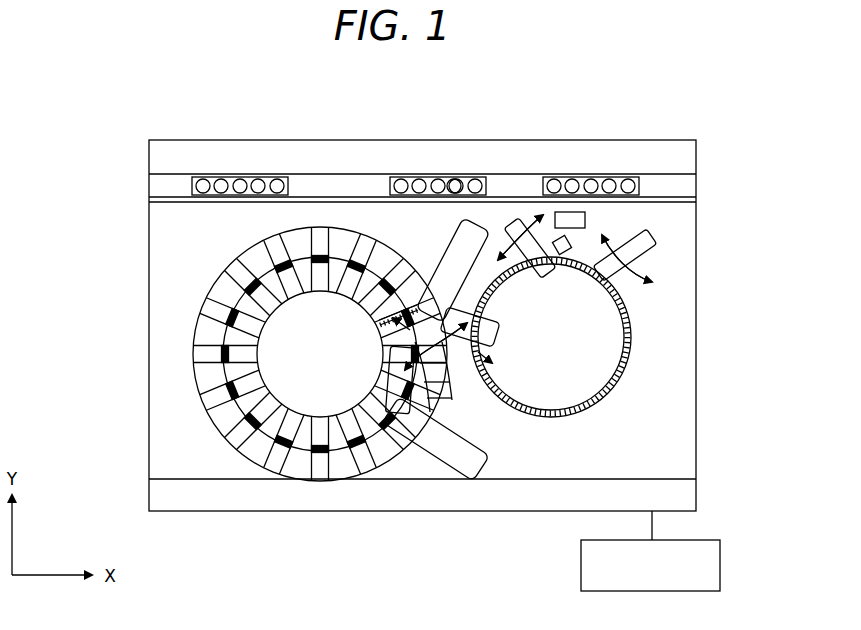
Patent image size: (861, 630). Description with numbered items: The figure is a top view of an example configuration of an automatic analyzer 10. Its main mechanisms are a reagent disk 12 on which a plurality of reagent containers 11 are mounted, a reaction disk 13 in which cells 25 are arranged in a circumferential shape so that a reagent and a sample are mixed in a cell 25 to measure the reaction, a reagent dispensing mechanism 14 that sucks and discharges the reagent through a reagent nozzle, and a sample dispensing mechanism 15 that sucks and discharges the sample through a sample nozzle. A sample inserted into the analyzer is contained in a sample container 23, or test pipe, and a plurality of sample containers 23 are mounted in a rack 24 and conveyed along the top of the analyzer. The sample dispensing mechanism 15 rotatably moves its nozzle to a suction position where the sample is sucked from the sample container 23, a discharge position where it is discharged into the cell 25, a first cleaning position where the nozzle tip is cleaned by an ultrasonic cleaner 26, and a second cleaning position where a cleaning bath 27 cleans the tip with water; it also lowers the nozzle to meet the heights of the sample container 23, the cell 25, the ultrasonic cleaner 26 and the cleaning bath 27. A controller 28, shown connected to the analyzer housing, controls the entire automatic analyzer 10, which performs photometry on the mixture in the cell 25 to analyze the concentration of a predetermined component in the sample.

The automatic analyzer 10 is at (168, 260).
The reagent container 11 is at (195, 353).
The reagent disk 12 is at (252, 462).
The reaction disk 13 is at (560, 395).
The reagent dispensing mechanism 14 is at (453, 460).
The sample dispensing mechanism 15 is at (520, 210).
The sample container 23 is at (455, 186).
The rack 24 is at (393, 175).
The cell 25 is at (630, 332).
The ultrasonic cleaner 26 is at (572, 212).
The cleaning bath 27 is at (570, 245).
The controller 28 is at (722, 566).